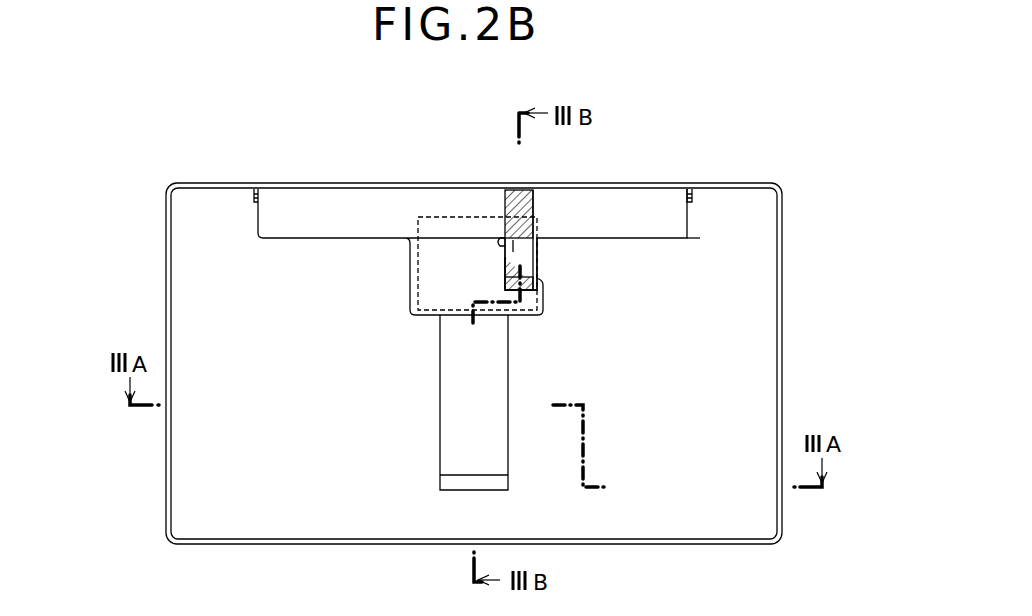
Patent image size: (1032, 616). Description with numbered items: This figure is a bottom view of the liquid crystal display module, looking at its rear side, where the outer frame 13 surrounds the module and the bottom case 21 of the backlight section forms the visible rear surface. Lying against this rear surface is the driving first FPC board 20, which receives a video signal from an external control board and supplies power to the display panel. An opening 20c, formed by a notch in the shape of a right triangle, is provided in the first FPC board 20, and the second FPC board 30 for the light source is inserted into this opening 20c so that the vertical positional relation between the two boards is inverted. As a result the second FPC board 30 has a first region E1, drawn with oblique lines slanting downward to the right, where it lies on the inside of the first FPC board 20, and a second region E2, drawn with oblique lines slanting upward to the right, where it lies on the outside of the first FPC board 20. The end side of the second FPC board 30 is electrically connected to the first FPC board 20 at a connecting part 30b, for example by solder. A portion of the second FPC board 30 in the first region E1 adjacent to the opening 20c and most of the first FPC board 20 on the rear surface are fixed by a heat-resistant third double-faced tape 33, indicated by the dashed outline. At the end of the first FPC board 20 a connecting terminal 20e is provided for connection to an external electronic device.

The outer frame 13 is at (778, 196).
The first FPC board 20 is at (353, 205).
The bottom case 21 is at (725, 208).
The opening 20c is at (544, 268).
The connecting terminal 20e is at (447, 478).
The second FPC board 30 is at (510, 210).
The connecting part 30b is at (542, 289).
The third double-faced tape 33 is at (445, 230).
The first region E1 is at (528, 213).
The second region E2 is at (529, 268).